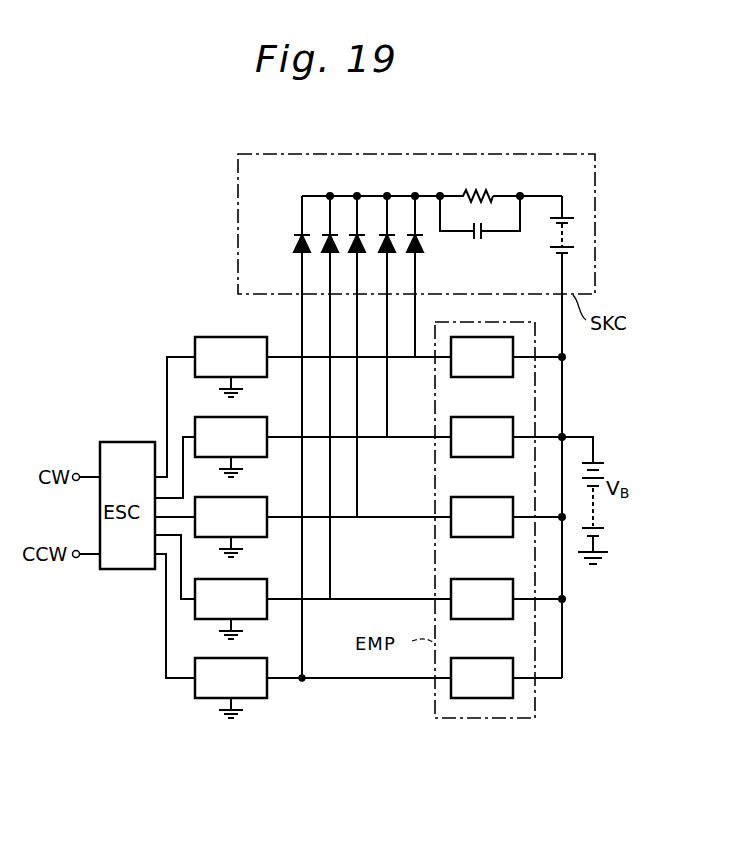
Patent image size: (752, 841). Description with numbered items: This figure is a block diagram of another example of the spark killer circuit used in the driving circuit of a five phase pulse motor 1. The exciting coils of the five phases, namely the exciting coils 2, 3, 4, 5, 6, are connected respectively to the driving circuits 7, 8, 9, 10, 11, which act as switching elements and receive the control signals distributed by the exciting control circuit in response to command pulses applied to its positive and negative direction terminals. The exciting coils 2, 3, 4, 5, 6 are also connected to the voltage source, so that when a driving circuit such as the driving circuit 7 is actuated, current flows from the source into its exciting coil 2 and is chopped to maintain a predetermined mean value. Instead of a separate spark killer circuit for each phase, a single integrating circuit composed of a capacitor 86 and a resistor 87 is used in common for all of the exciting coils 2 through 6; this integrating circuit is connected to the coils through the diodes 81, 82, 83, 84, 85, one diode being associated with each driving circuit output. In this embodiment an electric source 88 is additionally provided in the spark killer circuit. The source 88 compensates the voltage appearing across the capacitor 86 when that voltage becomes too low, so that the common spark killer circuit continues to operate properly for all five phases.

The five phase pulse motor 1 is at (539, 330).
The exciting coil CA 2 is at (509, 378).
The exciting coil CB 3 is at (506, 458).
The exciting coil CC 4 is at (506, 538).
The exciting coil CD 5 is at (506, 620).
The exciting coil CE 6 is at (503, 699).
The driving circuit DRA 7 is at (266, 338).
The driving circuit DRB 8 is at (265, 418).
The driving circuit DRC 9 is at (265, 498).
The driving circuit DRD 10 is at (296, 568).
The driving circuit DRE 11 is at (296, 647).
The diode 81 is at (424, 236).
The diode 82 is at (397, 236).
The diode 83 is at (368, 236).
The diode 84 is at (340, 236).
The diode 85 is at (312, 236).
The capacitor 86 is at (481, 242).
The resistor 87 is at (462, 193).
The electric source VS 88 is at (578, 228).